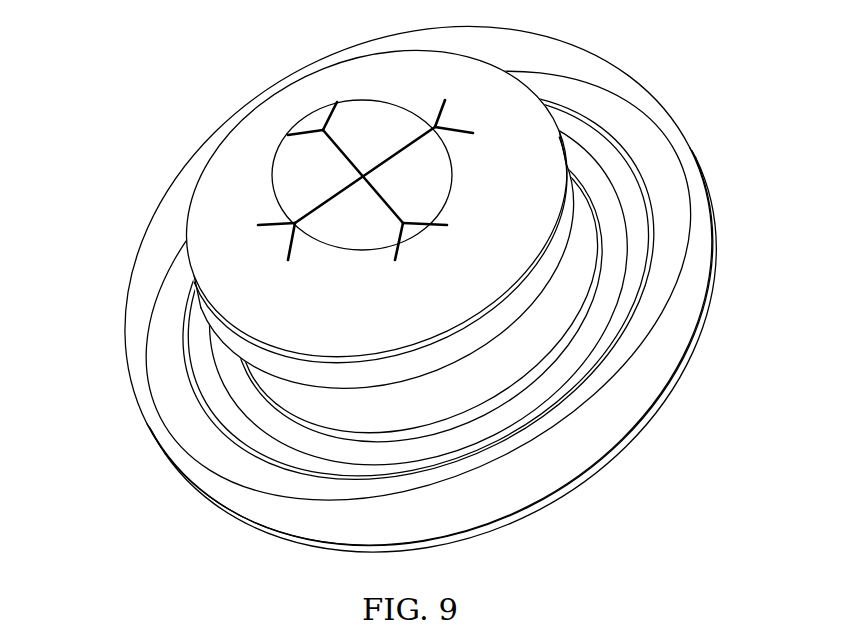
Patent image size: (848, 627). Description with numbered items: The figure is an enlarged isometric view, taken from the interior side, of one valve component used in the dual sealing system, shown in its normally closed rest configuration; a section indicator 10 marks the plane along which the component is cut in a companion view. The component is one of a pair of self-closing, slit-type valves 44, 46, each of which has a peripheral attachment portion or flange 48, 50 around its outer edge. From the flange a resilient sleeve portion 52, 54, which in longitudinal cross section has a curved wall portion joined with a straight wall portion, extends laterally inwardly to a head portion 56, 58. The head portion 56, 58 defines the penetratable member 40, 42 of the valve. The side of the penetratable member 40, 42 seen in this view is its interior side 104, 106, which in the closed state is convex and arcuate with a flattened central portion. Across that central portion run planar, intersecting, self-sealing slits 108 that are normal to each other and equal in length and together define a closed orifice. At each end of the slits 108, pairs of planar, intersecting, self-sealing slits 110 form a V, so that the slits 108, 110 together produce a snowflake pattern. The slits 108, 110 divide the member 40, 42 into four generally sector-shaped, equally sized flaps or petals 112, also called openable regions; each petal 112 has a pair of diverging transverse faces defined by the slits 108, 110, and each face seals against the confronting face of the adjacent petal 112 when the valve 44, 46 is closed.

The section line 10 is at (145, 158).
The penetratable member 40 is at (350, 205).
The penetratable member 42 is at (230, 200).
The self-closing slit-type valve 44 is at (418, 313).
The self-closing slit-type valve 46 is at (641, 62).
The flange 48 is at (467, 350).
The flange 50 is at (701, 204).
The resilient sleeve portion 52 is at (432, 285).
The resilient sleeve portion 54 is at (611, 182).
The head portion 56 is at (312, 250).
The head portion 58 is at (200, 248).
The interior side 104 is at (302, 259).
The interior side 106 is at (283, 290).
The self-sealing slits 108 is at (340, 143).
The self-sealing slits 110 is at (295, 133).
The flaps or petals 112 is at (388, 120).